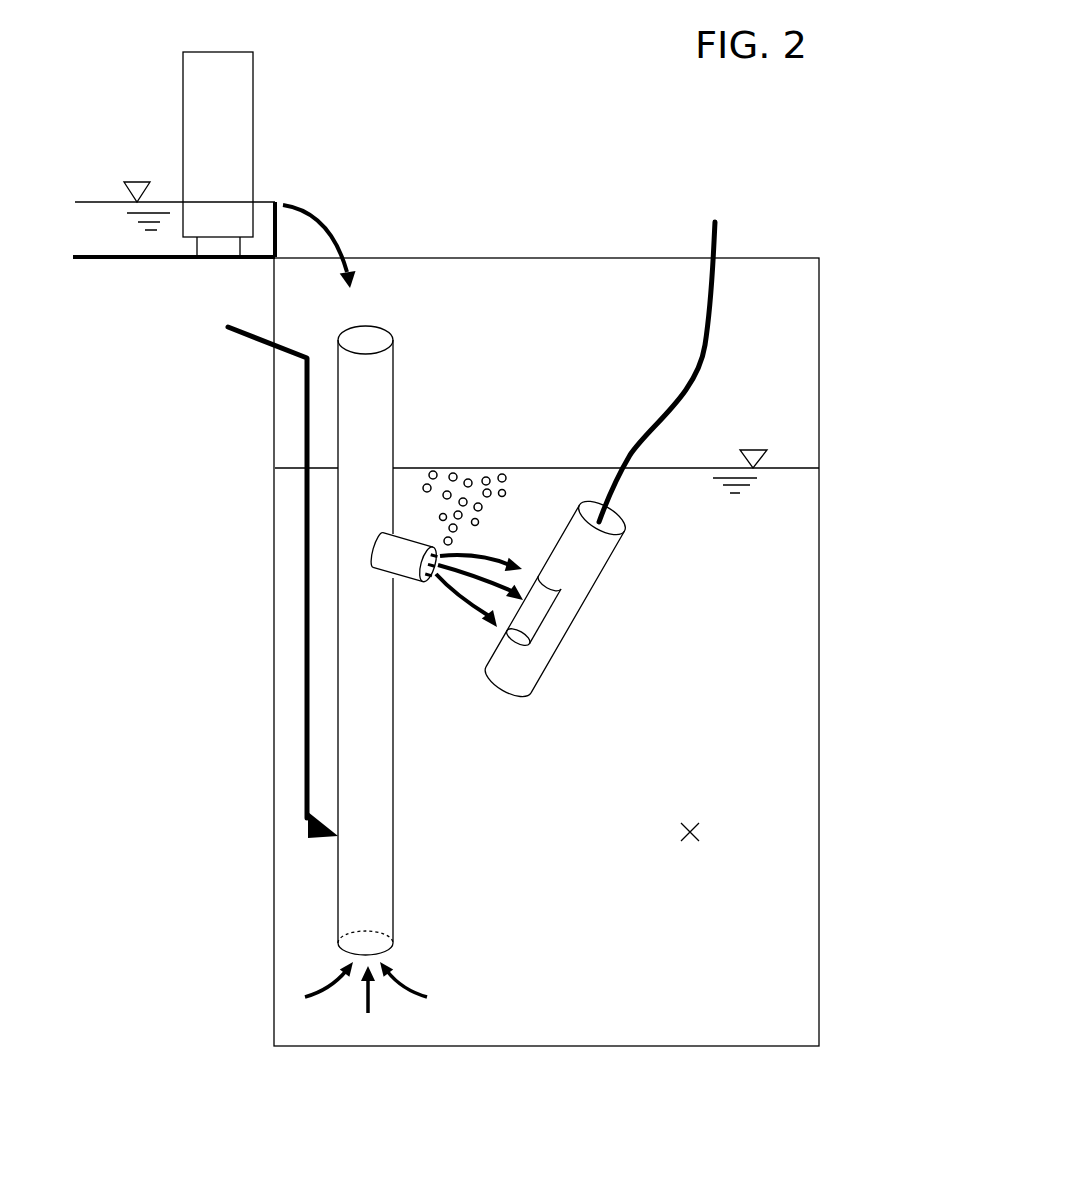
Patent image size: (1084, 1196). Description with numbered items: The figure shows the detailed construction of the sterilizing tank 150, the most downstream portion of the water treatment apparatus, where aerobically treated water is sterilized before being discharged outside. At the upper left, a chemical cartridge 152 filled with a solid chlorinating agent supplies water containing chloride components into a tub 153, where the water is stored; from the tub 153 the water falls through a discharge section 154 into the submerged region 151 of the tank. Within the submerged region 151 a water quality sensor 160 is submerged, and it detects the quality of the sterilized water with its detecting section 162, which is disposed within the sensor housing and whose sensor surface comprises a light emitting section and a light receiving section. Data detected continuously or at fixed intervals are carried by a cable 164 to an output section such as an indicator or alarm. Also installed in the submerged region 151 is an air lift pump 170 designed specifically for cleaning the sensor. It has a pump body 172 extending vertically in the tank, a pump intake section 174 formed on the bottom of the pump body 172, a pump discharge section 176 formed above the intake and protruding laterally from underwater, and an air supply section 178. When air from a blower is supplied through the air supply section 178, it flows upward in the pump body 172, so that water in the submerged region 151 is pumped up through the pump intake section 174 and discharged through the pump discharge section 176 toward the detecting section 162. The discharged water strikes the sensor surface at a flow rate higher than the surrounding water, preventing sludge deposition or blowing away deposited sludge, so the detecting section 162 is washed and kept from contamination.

The sterilizing tank 150 is at (820, 440).
The submerged region 151 is at (697, 833).
The chemical cartridge 152 is at (257, 110).
The tub 153 is at (177, 260).
The discharge section 154 is at (285, 193).
The water quality sensor 160 is at (618, 646).
The detecting section 162 is at (597, 680).
The cable 164 is at (707, 298).
The air lift pump 170 is at (353, 603).
The pump body 172 is at (393, 812).
The pump intake section 174 is at (348, 943).
The pump discharge section 176 is at (408, 567).
The air supply section 178 is at (305, 527).